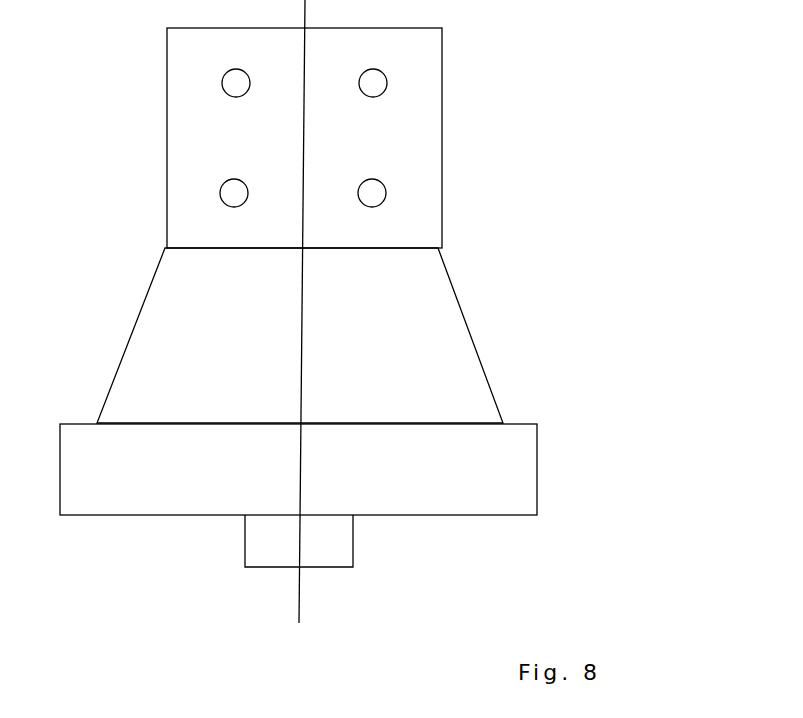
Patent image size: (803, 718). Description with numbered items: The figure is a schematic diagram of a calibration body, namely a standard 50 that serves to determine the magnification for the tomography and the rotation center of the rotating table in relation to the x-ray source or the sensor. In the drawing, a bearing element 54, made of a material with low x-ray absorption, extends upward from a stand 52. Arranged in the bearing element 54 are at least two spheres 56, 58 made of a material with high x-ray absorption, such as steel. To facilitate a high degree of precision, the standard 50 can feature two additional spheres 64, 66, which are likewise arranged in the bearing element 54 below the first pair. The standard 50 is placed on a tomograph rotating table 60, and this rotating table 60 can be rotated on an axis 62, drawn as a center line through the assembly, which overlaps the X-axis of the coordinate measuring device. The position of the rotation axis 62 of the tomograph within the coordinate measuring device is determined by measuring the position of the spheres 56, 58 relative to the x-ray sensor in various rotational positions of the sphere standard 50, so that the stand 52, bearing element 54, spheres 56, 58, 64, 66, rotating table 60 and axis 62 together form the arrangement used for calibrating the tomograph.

The standard 50 is at (578, 92).
The stand 52 is at (465, 382).
The bearing element 54 is at (412, 222).
The sphere 56 is at (222, 70).
The sphere 58 is at (385, 70).
The tomograph rotating table 60 is at (518, 470).
The axis 62 is at (301, 605).
The additional sphere 64 is at (222, 180).
The additional sphere 66 is at (385, 180).